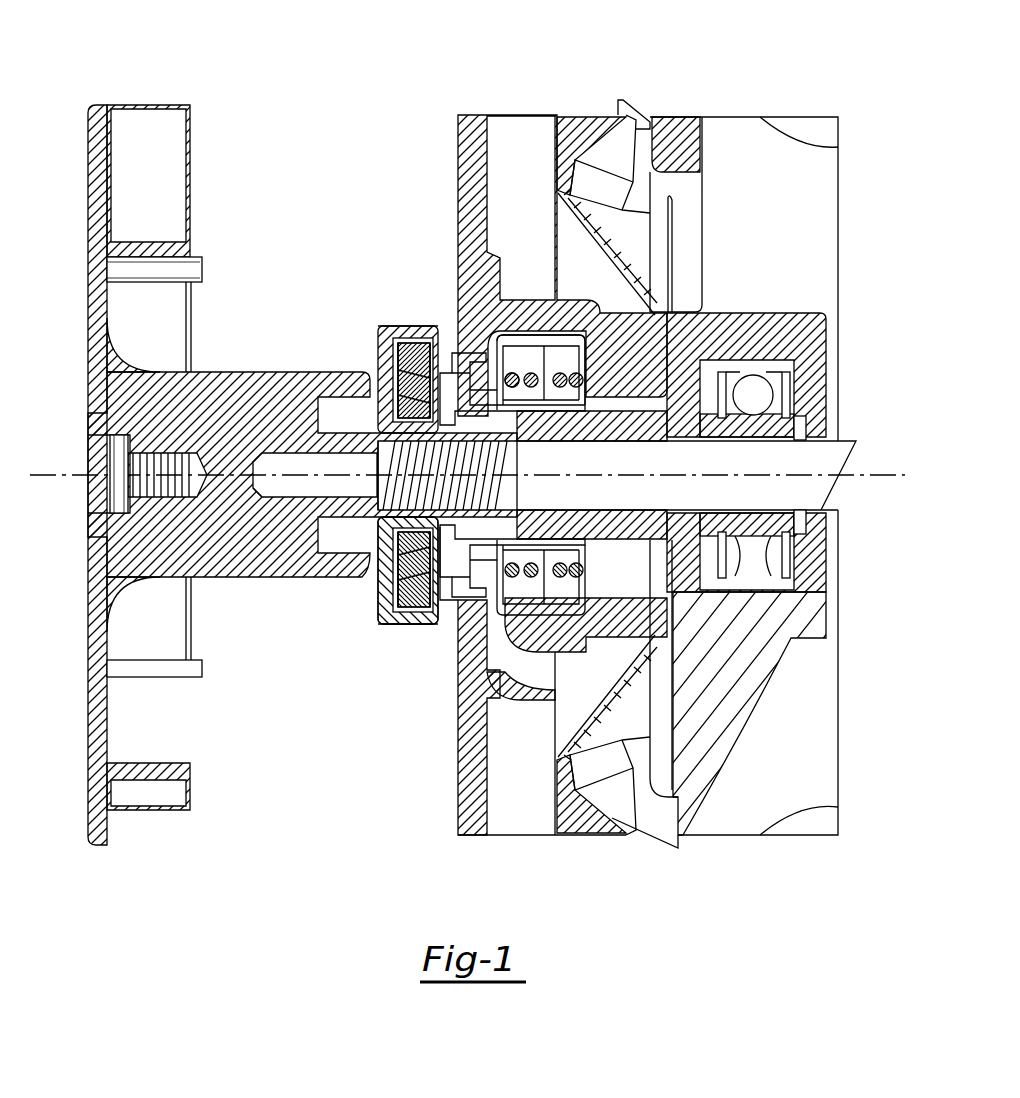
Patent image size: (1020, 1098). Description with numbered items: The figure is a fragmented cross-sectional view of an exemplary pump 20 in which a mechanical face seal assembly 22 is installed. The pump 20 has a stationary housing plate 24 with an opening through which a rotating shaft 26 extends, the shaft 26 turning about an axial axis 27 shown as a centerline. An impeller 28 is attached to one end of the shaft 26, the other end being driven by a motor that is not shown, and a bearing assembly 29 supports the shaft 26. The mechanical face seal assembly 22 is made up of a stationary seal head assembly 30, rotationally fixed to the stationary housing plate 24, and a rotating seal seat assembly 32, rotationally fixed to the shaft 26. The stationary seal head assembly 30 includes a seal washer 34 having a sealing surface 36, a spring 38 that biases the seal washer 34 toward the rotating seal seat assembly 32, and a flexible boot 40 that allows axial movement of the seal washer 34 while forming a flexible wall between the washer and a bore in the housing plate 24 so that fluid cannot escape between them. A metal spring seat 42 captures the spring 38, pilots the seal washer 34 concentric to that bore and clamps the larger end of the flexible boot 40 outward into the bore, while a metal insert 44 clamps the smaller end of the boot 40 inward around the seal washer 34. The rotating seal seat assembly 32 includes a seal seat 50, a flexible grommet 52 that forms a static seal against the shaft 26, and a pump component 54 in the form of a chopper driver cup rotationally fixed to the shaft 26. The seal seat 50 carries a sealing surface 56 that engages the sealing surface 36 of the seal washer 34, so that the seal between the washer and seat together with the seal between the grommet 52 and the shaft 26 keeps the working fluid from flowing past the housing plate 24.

The pump 20 is at (58, 132).
The mechanical face seal assembly 22 is at (378, 292).
The stationary housing plate 24 is at (462, 150).
The rotating shaft 26 is at (745, 514).
The axial axis 27 is at (880, 465).
The impeller 28 is at (172, 160).
The bearing assembly 29 is at (748, 300).
The stationary seal head assembly 30 is at (490, 625).
The rotating seal seat assembly 32 is at (376, 630).
The seal washer 34 is at (400, 328).
The sealing surface 36 is at (400, 390).
The spring 38 is at (490, 360).
The flexible boot 40 is at (510, 372).
The metal spring seat 42 is at (560, 372).
The metal insert 44 is at (515, 648).
The seal seat 50 is at (420, 600).
The flexible grommet 52 is at (400, 570).
The pump component 54 is at (418, 328).
The sealing surface 56 is at (400, 592).